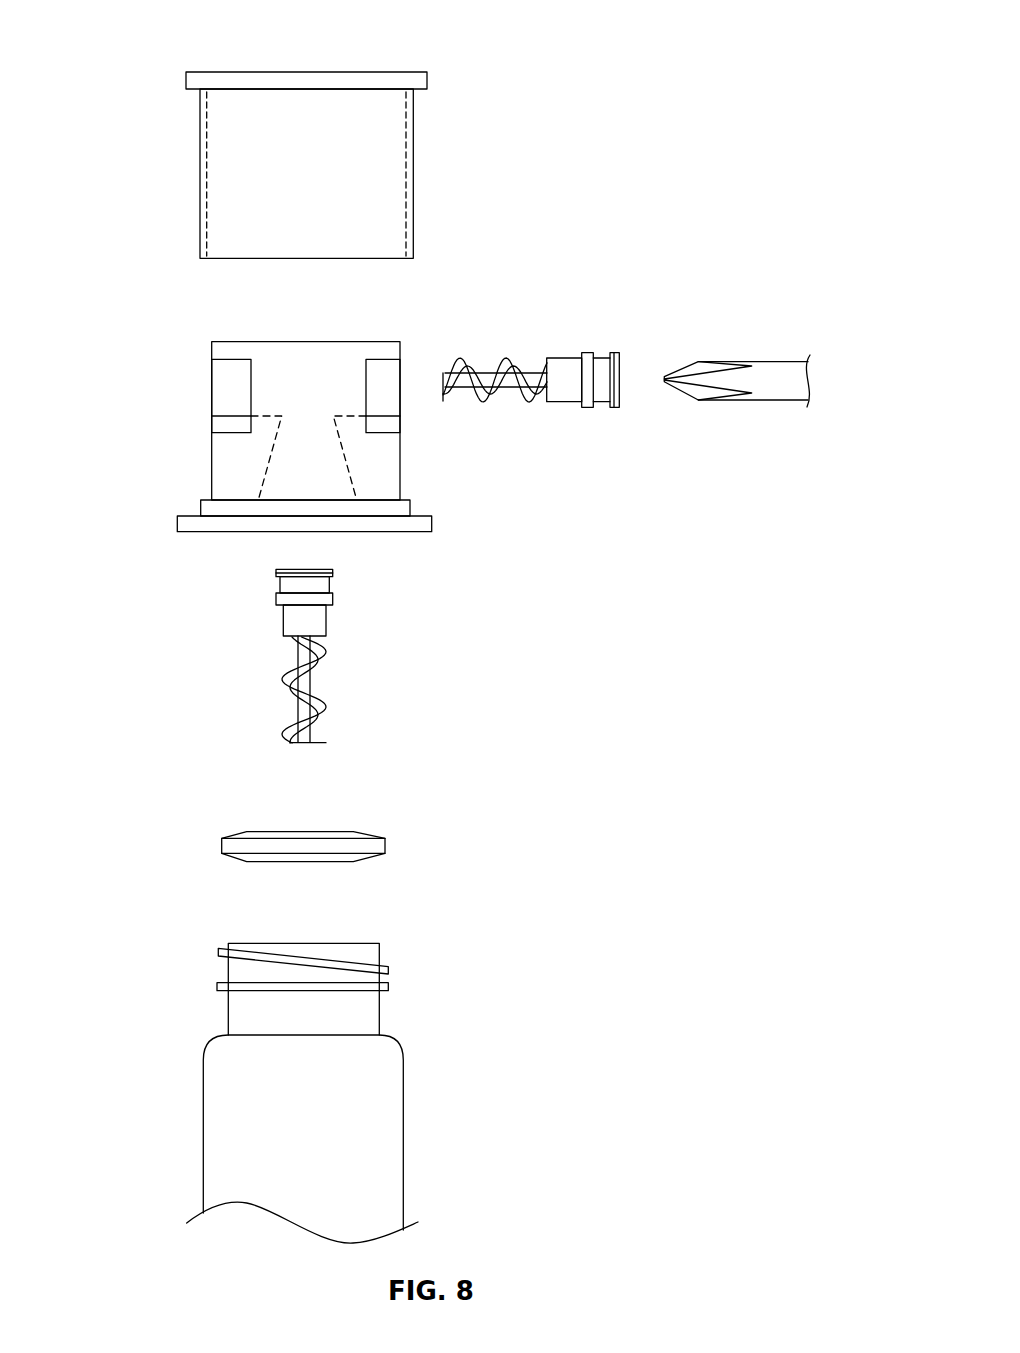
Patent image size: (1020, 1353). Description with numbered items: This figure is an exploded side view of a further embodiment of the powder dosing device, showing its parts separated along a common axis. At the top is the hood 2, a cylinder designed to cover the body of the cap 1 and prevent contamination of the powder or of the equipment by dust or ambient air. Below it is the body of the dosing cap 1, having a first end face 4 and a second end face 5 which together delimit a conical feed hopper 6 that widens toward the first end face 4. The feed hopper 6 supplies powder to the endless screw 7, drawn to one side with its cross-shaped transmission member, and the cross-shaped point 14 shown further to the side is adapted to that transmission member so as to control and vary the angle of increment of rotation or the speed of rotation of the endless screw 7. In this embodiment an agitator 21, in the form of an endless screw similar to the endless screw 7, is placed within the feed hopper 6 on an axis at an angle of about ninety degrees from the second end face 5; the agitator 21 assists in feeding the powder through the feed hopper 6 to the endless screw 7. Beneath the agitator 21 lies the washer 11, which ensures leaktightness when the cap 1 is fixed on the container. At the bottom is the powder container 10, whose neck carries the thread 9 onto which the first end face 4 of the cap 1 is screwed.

The cap 1 is at (146, 40).
The hood 2 is at (413, 173).
The first end face 4 is at (391, 532).
The second end face 5 is at (361, 341).
The feed hopper 6 is at (352, 478).
The endless screw 7 is at (507, 358).
The thread 9 is at (360, 962).
The powder container 10 is at (403, 1108).
The washer 11 is at (385, 845).
The cross-shaped point 14 is at (783, 373).
The agitator 21 is at (326, 700).